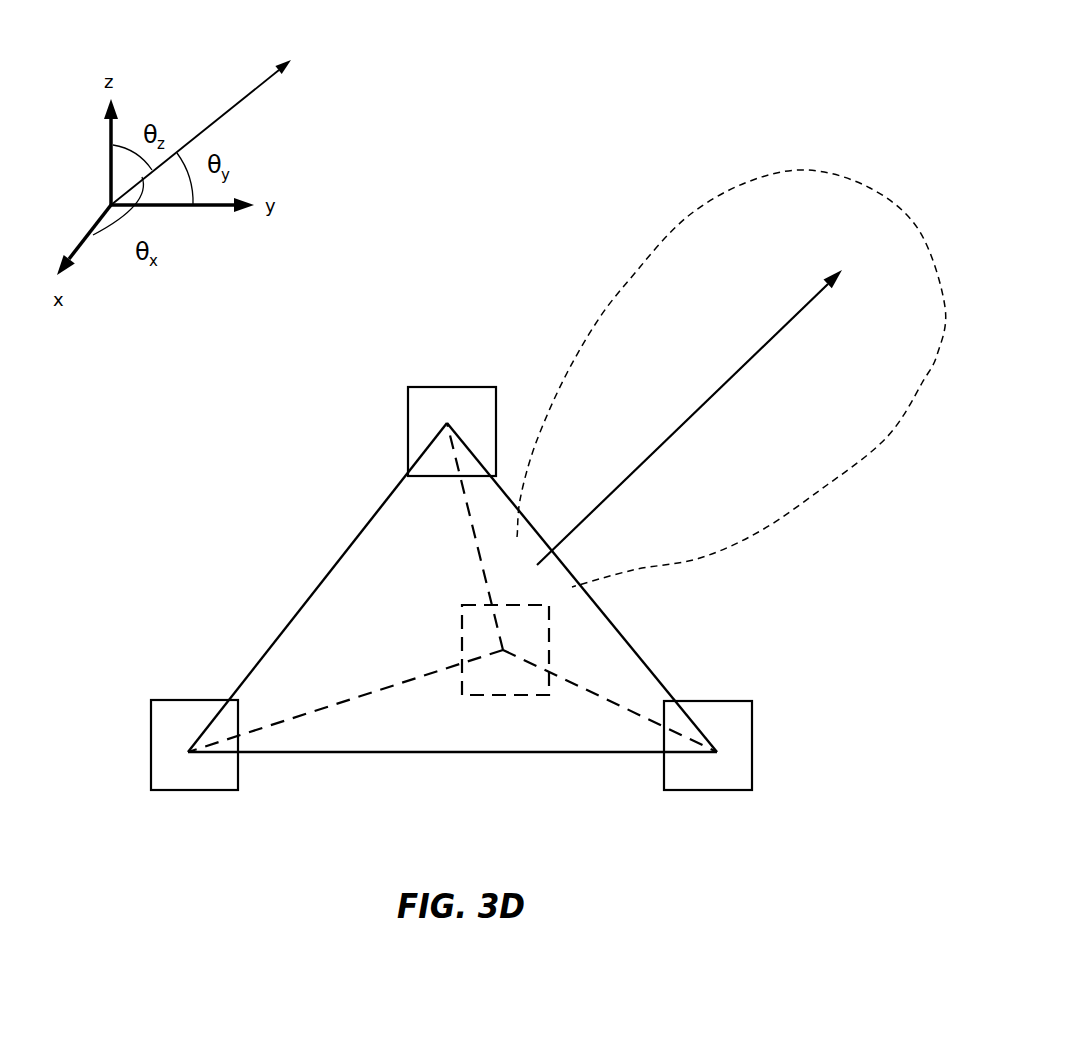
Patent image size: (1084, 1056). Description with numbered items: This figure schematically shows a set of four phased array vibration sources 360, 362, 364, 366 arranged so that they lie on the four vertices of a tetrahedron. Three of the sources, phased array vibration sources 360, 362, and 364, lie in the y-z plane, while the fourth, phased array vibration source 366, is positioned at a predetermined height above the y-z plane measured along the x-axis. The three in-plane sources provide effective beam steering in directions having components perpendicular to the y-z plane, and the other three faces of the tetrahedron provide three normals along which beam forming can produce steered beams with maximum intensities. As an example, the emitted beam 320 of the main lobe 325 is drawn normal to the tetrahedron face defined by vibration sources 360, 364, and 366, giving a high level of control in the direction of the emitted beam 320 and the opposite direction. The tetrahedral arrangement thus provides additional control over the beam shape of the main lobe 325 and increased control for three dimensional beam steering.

The emitted beam 320 is at (257, 82).
The main lobe 325 is at (832, 486).
The phased array vibration source 360 is at (752, 765).
The phased array vibration source 362 is at (151, 752).
The phased array vibration source 364 is at (415, 387).
The phased array vibration source 366 is at (507, 695).